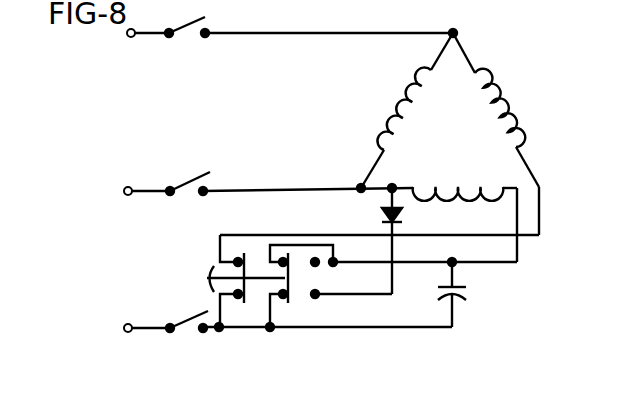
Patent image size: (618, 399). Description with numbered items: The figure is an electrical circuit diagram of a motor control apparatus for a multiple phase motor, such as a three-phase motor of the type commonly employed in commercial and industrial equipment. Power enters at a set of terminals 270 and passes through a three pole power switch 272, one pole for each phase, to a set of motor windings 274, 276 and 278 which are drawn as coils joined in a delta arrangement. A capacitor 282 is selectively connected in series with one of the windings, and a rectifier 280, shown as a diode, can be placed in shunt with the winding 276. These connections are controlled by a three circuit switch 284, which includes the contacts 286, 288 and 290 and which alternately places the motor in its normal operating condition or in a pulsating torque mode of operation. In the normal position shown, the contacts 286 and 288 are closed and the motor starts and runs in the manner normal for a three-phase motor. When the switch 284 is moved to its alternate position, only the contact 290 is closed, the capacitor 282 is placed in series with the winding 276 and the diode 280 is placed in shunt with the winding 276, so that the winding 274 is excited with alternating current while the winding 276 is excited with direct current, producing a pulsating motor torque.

The terminals 270 is at (127, 37).
The three pole power switch 272 is at (188, 30).
The motor winding 274 is at (404, 101).
The motor winding 276 is at (460, 200).
The motor winding 278 is at (504, 101).
The rectifier 280 is at (382, 215).
The capacitor 282 is at (466, 292).
The three circuit switch 284 is at (259, 254).
The contact 286 is at (238, 273).
The contact 288 is at (277, 285).
The contact 290 is at (318, 280).